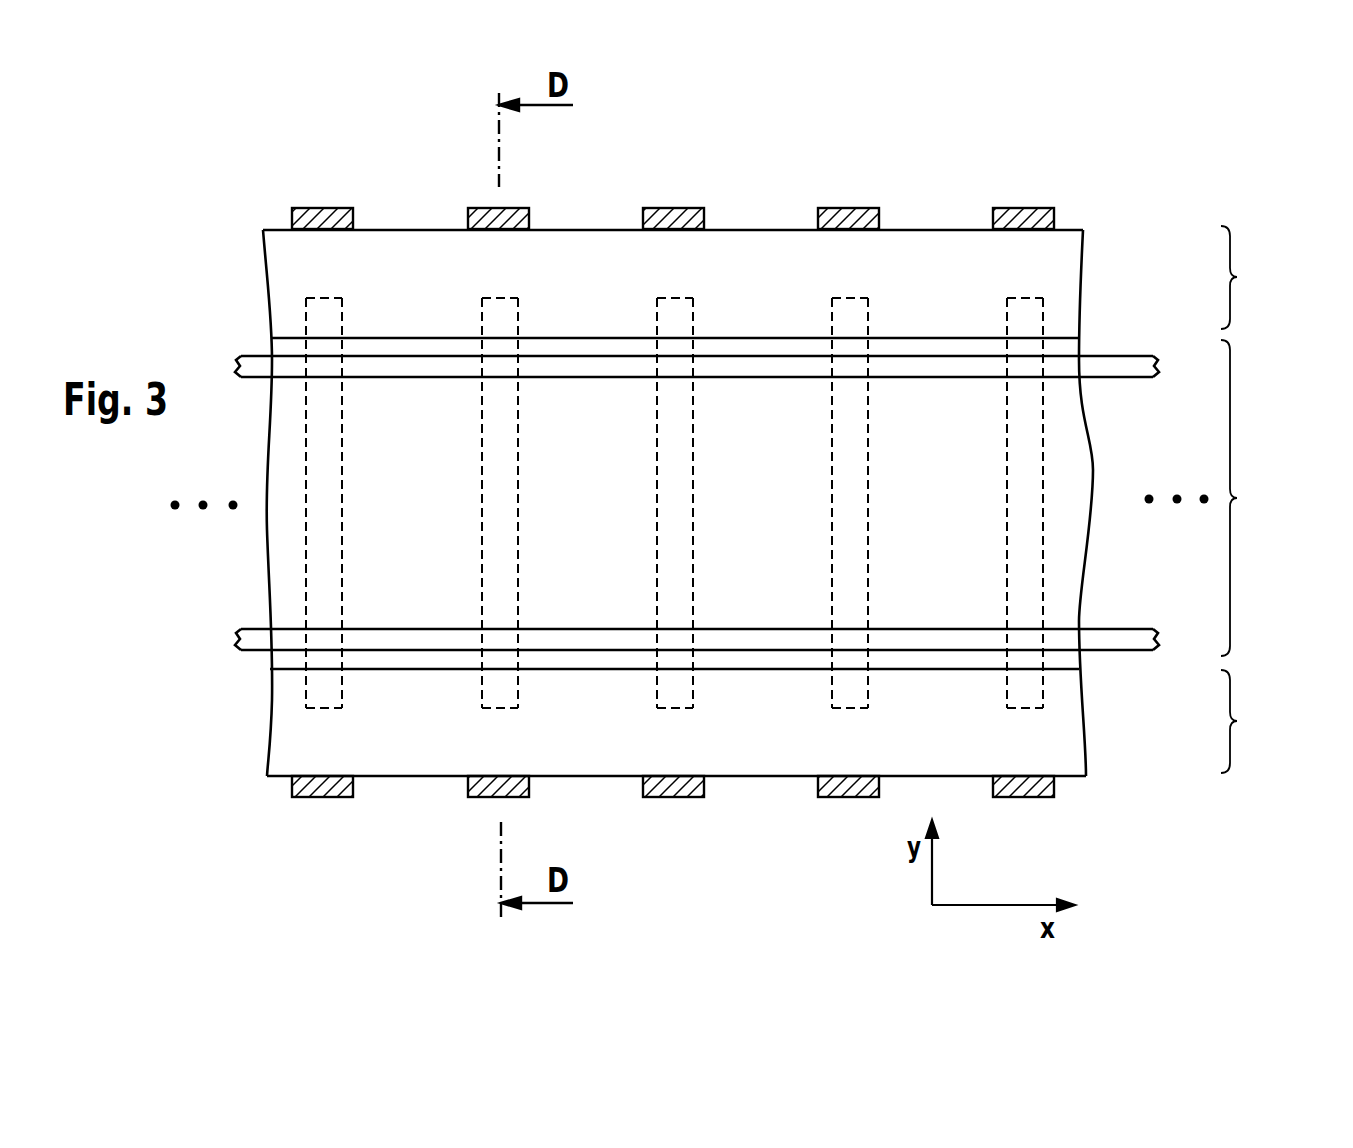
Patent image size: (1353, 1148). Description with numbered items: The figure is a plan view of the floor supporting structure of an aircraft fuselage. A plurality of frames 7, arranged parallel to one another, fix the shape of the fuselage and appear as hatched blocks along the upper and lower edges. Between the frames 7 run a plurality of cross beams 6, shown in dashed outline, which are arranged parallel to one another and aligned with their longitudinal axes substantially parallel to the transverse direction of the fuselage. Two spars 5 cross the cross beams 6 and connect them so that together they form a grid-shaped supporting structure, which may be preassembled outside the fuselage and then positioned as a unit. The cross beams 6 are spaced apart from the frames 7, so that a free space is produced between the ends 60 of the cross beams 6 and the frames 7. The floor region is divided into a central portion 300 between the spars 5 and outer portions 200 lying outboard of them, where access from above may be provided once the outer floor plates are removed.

The spar 5 is at (1127, 367).
The cross beam 6 is at (327, 458).
The end of cross beam 60 is at (338, 298).
The frame 7 is at (322, 222).
The outer portion 200 is at (1237, 277).
The central portion 300 is at (1237, 498).